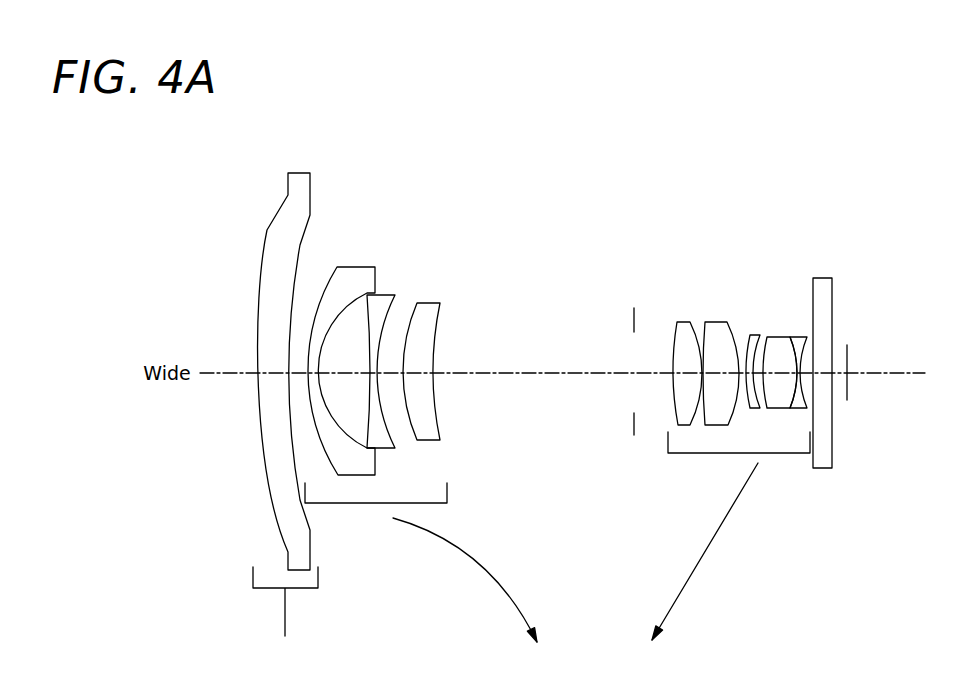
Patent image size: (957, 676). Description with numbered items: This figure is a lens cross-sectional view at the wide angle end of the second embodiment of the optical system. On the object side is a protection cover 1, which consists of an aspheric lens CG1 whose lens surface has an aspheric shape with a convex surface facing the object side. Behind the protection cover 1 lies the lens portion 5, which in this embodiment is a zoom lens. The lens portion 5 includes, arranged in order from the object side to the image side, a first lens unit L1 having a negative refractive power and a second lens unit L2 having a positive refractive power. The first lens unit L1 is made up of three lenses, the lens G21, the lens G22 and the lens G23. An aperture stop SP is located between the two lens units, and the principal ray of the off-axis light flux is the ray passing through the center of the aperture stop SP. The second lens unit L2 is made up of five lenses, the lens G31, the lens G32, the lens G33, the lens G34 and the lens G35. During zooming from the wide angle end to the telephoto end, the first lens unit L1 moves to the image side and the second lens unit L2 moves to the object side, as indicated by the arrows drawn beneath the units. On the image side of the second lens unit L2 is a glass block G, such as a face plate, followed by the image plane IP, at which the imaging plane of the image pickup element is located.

The protection cover 1 is at (278, 167).
The aspheric lens CG1 is at (267, 257).
The lens portion 5 is at (302, 139).
The first lens unit L1 is at (337, 197).
The lens G21 is at (352, 278).
The lens G22 is at (387, 303).
The lens G23 is at (435, 318).
The aperture stop SP is at (634, 316).
The second lens unit L2 is at (622, 212).
The lens G31 is at (683, 323).
The lens G32 is at (715, 325).
The lens G33 is at (755, 337).
The lens G34 is at (773, 337).
The lens G35 is at (798, 337).
The glass block G is at (818, 280).
The image plane IP is at (848, 346).